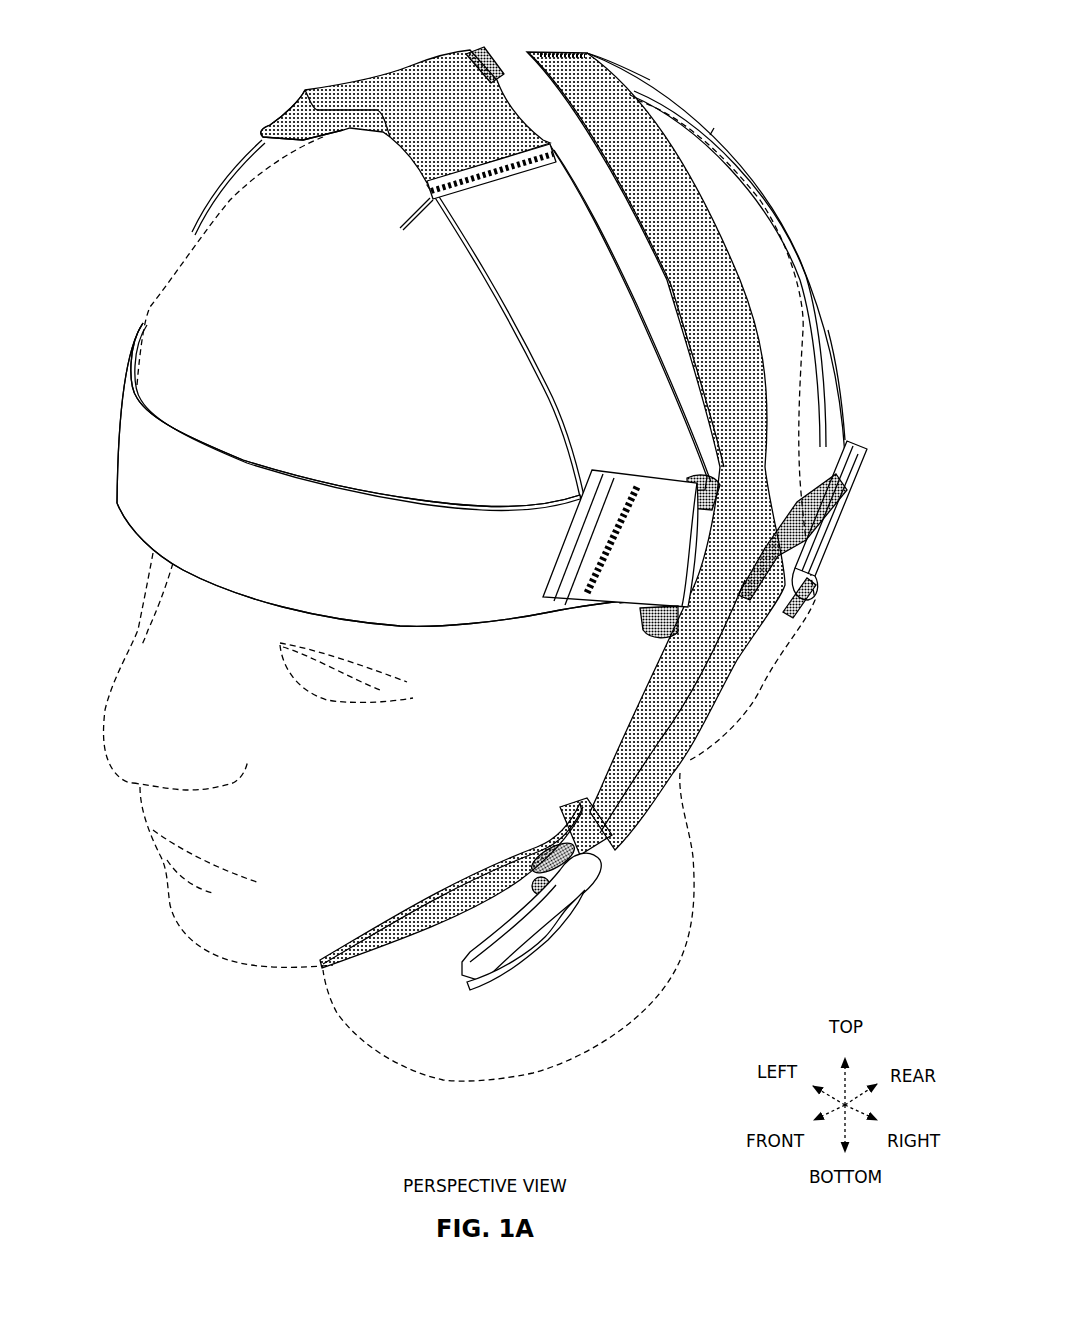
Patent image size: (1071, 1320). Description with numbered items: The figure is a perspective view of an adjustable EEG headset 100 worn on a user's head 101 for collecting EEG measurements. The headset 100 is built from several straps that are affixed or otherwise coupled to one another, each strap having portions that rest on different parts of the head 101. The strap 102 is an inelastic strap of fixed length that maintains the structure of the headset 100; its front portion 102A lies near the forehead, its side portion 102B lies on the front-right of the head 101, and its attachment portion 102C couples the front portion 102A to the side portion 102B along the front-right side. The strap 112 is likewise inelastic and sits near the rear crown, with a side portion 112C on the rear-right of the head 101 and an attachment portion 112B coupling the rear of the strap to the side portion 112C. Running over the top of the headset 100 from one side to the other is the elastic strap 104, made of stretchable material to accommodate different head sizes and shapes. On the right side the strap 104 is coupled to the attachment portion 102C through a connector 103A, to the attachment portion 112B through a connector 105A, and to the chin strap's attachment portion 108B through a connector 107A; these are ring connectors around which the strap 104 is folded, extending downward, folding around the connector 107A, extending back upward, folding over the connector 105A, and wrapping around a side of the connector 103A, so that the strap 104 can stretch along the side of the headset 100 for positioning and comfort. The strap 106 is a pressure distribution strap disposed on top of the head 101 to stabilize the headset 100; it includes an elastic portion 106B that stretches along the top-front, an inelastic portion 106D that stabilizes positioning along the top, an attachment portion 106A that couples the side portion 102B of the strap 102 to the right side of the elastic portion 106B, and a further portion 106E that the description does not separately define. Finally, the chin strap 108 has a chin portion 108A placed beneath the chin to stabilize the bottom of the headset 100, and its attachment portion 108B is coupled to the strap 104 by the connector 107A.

The adjustable EEG headset 100 is at (146, 80).
The user's head 101 is at (160, 276).
The strap 102 is at (340, 474).
The front portion 102A is at (266, 470).
The side portion 102B is at (510, 335).
The attachment portion 102C is at (641, 470).
The connector 103A is at (648, 627).
The strap 104 is at (722, 682).
The connector 105A is at (812, 600).
The pressure distribution strap 106 is at (387, 132).
The attachment portion 106A is at (427, 190).
The elastic portion 106B is at (372, 80).
The inelastic portion 106D is at (470, 50).
The strap end 106E is at (630, 70).
The connector 107A is at (535, 857).
The chin strap 108 is at (368, 970).
The chin portion 108A is at (423, 945).
The attachment portion 108B is at (545, 925).
The strap 112 is at (815, 270).
The attachment portion 112B is at (845, 530).
The side portion 112C is at (838, 400).